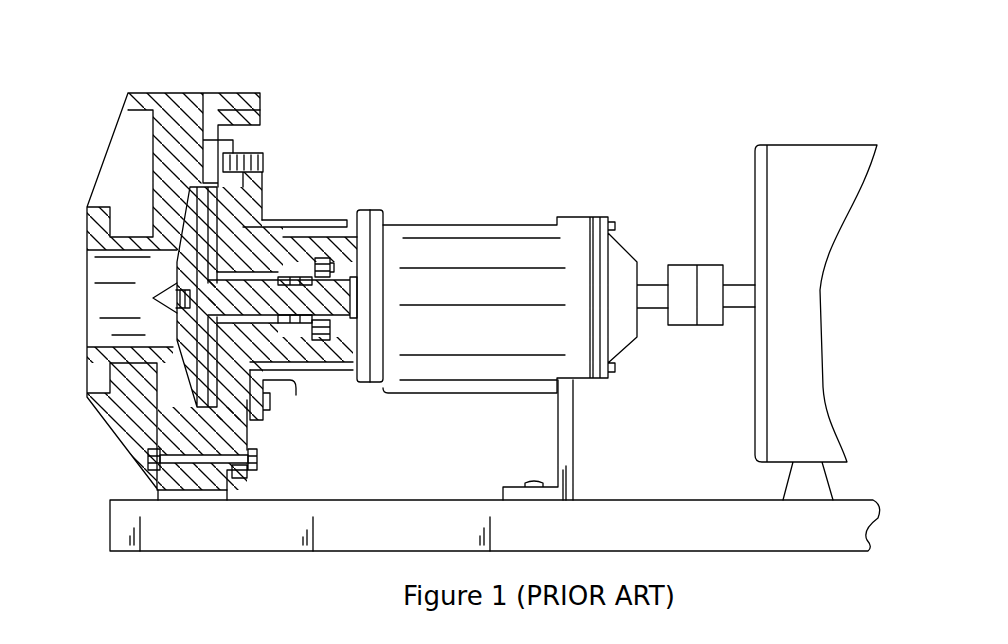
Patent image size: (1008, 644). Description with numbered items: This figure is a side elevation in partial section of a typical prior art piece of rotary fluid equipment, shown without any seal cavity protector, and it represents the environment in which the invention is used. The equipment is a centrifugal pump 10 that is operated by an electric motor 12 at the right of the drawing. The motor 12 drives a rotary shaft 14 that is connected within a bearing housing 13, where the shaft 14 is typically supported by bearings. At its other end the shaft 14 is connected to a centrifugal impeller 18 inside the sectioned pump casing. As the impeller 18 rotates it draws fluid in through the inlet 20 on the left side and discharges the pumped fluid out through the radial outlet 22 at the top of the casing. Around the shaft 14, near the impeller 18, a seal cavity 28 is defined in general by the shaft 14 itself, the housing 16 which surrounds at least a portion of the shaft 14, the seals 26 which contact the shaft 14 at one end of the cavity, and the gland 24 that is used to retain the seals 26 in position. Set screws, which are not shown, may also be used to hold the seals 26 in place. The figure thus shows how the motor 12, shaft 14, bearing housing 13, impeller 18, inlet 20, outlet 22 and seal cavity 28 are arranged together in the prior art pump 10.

The centrifugal pump 10 is at (390, 179).
The electric motor 12 is at (807, 310).
The bearing housing 13 is at (449, 214).
The rotary shaft 14 is at (328, 293).
The housing 16 is at (253, 253).
The centrifugal impeller 18 is at (193, 367).
The inlet 20 is at (103, 302).
The radial outlet 22 is at (187, 107).
The gland 24 is at (317, 333).
The seals 26 is at (283, 318).
The seal cavity 28 is at (260, 322).